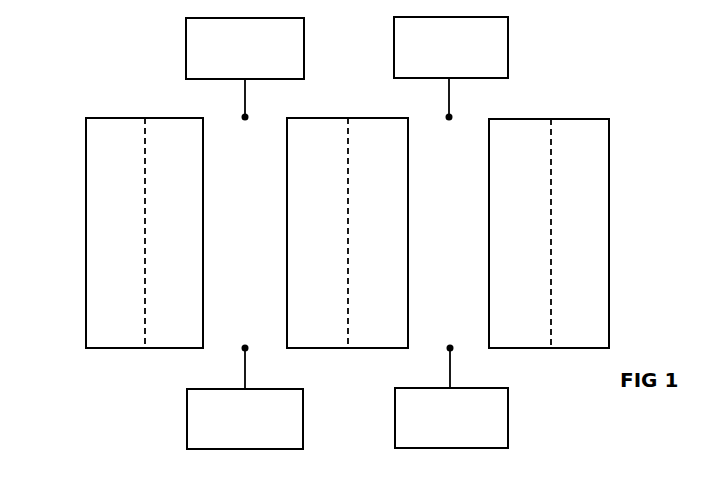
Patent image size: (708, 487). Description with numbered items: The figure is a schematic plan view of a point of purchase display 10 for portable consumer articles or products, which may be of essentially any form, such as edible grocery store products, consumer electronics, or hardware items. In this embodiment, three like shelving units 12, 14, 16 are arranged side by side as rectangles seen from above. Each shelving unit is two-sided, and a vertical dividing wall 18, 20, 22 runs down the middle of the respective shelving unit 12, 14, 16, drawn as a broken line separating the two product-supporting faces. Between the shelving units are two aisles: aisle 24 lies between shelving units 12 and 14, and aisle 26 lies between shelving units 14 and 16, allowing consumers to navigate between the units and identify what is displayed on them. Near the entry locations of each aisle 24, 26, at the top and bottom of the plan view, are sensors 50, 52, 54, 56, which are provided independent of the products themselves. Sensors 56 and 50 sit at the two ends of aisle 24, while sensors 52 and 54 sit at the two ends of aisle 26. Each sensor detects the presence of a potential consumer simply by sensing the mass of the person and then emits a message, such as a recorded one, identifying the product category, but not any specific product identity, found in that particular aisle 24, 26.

The point of purchase display 10 is at (157, 385).
The shelving unit 12 is at (86, 298).
The shelving unit 14 is at (285, 250).
The shelving unit 16 is at (489, 253).
The vertical dividing wall 18 is at (145, 182).
The vertical dividing wall 20 is at (348, 182).
The vertical dividing wall 22 is at (551, 212).
The aisle 24 is at (258, 226).
The aisle 26 is at (461, 226).
The sensor 50 is at (245, 397).
The sensor 52 is at (451, 69).
The sensor 54 is at (451, 397).
The sensor 56 is at (245, 69).